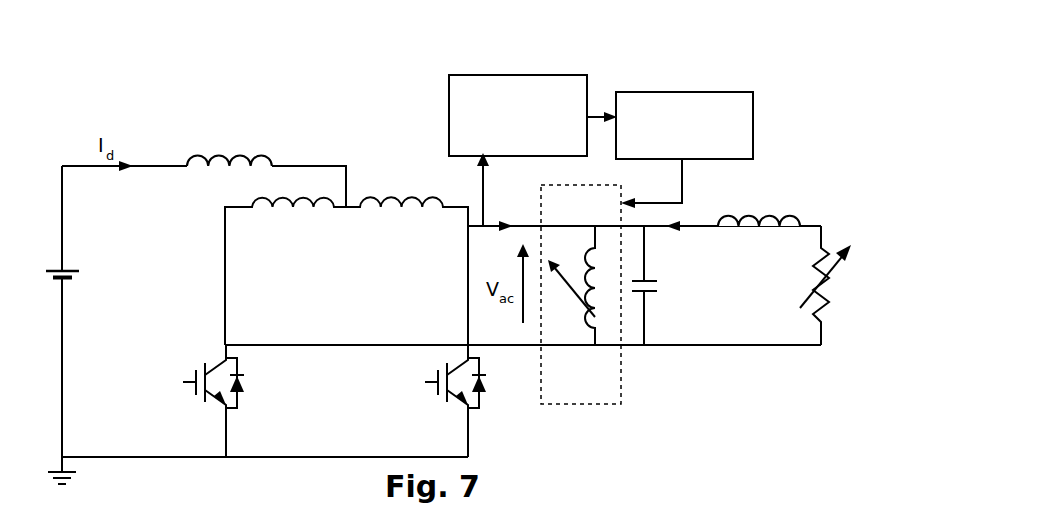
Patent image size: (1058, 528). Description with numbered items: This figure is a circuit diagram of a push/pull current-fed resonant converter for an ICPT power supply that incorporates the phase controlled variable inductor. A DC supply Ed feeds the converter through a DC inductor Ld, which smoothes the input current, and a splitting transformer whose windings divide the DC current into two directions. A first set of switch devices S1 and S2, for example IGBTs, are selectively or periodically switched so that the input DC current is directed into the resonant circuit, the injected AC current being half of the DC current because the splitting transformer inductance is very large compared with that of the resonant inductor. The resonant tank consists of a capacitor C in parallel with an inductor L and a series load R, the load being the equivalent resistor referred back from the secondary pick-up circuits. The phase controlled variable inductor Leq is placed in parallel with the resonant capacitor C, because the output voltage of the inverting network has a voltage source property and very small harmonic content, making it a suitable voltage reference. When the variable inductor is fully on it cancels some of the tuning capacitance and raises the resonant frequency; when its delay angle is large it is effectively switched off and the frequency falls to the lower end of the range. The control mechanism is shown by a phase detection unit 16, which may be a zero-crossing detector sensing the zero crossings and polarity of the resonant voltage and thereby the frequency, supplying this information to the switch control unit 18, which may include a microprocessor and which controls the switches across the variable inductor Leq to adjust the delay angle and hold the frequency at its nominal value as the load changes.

The phase detection unit 16 is at (476, 75).
The switch control unit 18 is at (753, 125).
The DC inductor Ld is at (216, 150).
The DC supply Ed is at (75, 279).
The switch device S1 is at (213, 401).
The switch device S2 is at (455, 401).
The phase controlled variable inductor Leq is at (582, 321).
The resonant capacitor C is at (655, 285).
The resonant inductor L is at (759, 207).
The series load R is at (818, 285).